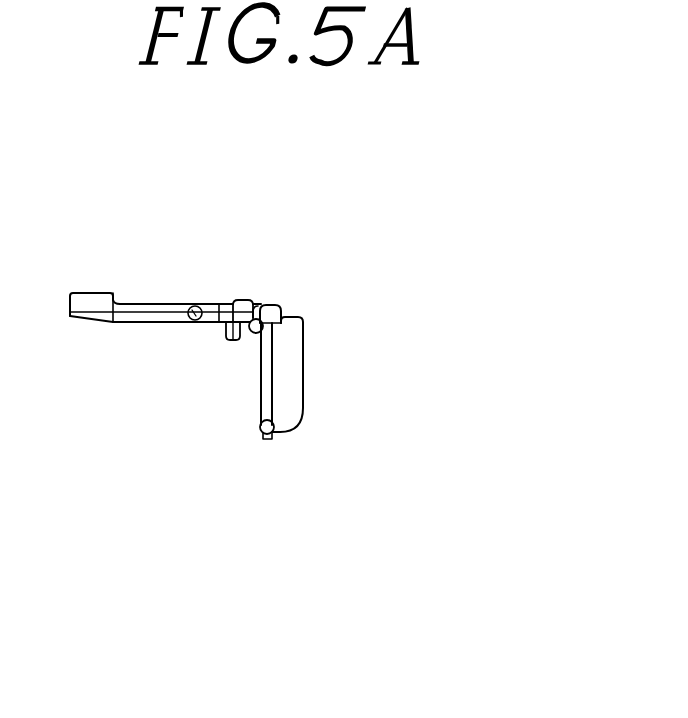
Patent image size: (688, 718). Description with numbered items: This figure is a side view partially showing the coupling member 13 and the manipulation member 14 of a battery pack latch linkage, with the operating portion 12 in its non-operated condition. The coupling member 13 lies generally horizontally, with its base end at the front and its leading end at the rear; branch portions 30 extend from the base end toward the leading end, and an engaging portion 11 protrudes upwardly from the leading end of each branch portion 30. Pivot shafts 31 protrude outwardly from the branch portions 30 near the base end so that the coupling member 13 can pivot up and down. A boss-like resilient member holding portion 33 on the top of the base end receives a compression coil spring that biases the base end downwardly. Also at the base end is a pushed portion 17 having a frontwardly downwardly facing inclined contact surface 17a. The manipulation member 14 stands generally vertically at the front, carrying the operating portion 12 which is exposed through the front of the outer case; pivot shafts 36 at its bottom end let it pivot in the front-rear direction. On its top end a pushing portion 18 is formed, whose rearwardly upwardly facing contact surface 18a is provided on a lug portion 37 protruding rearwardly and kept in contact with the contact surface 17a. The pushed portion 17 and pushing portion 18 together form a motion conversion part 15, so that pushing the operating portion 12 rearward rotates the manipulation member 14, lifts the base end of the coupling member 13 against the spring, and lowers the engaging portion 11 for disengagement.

The engaging portion 11 is at (88, 305).
The operating portion 12 is at (303, 332).
The coupling member 13 is at (153, 314).
The manipulation member 14 is at (345, 366).
The motion conversion part 15 is at (345, 329).
The pushed portion 17 is at (286, 269).
The inclined contact surface 17a is at (251, 318).
The pushing portion 18 is at (373, 378).
The contact surface 18a is at (262, 327).
The branch portions 30 is at (162, 324).
The pivot shafts 31 is at (190, 306).
The resilient member holding portion 33 is at (238, 300).
The pivot shafts 36 is at (270, 435).
The lug portion 37 is at (237, 375).